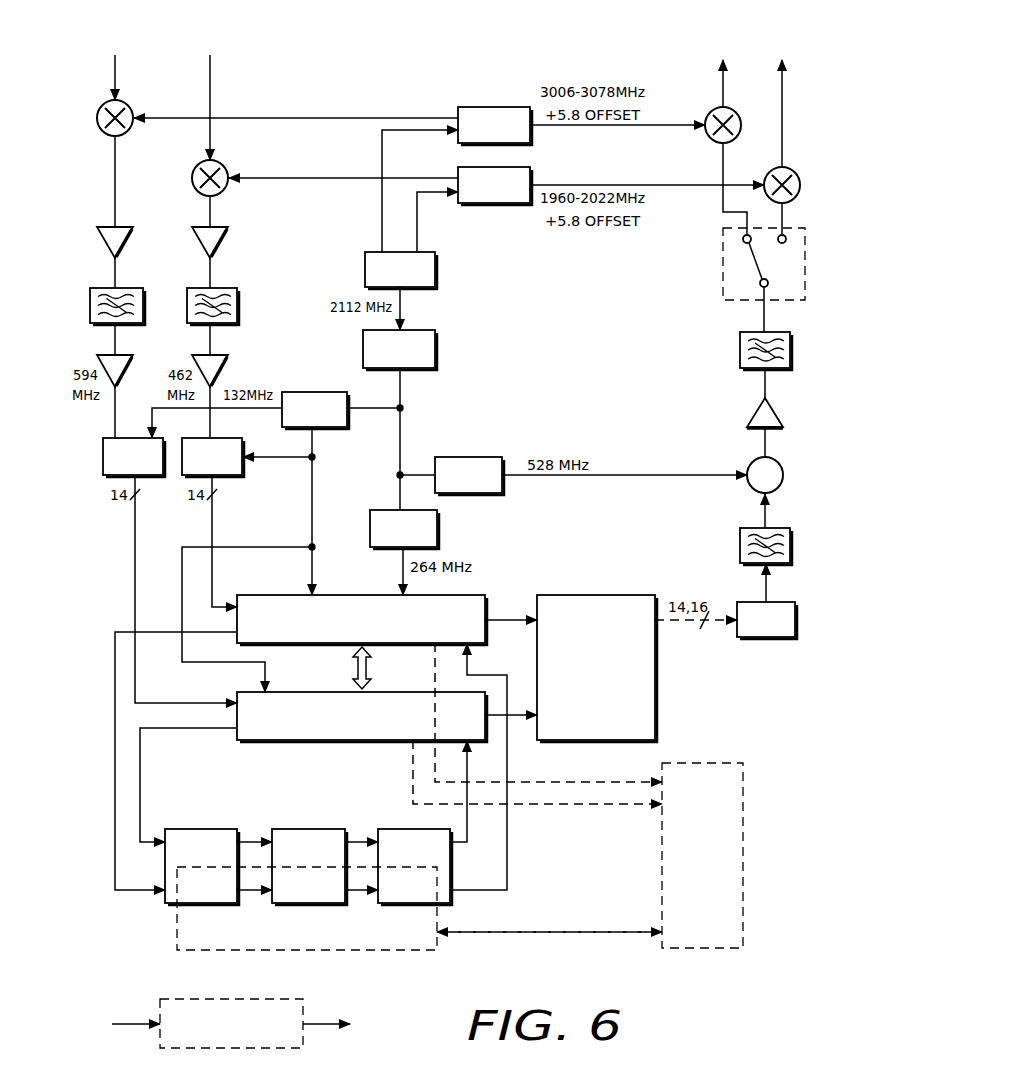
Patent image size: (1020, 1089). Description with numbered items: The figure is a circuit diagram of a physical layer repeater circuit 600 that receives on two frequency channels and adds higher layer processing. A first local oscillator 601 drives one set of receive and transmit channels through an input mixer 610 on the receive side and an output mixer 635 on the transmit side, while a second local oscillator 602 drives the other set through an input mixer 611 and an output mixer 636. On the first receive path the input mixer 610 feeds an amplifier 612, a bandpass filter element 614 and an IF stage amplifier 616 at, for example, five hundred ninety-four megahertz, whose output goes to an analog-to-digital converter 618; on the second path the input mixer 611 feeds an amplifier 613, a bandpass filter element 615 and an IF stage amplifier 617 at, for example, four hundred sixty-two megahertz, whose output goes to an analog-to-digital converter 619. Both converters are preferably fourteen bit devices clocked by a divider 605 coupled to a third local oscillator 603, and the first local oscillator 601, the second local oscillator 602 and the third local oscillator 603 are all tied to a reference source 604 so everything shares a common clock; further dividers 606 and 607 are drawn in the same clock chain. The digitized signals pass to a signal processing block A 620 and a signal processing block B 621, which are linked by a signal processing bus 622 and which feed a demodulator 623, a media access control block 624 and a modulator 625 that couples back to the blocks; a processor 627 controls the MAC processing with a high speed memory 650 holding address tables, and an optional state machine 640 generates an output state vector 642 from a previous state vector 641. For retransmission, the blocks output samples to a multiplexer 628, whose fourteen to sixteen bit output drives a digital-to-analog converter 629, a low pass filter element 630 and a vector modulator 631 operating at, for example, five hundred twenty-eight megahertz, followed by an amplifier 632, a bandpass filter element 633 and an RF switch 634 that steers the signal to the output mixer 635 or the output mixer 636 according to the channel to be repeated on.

The physical layer repeater circuit 600 is at (368, 79).
The local oscillator LO 1 601 is at (490, 107).
The local oscillator LO 2 602 is at (490, 203).
The local oscillator LO 3 603 is at (435, 349).
The reference source 604 is at (435, 272).
The divider 605 is at (325, 427).
The divide-by-8 divider 606 is at (437, 530).
The divide-by-4 divider 607 is at (490, 493).
The input mixer 610 is at (130, 105).
The input mixer 611 is at (225, 165).
The amplifier 612 is at (130, 245).
The amplifier 613 is at (225, 245).
The bandpass filter element 614 is at (143, 305).
The bandpass filter element 615 is at (237, 305).
The IF stage amplifier 616 is at (130, 365).
The IF stage amplifier 617 is at (225, 375).
The analog-to-digital converter 618 is at (103, 455).
The analog-to-digital converter 619 is at (242, 478).
The signal processing block A 620 is at (485, 595).
The signal processing block B 621 is at (318, 742).
The signal processing bus 622 is at (355, 672).
The demodulator 623 is at (212, 829).
The media access control block 624 is at (312, 829).
The modulator 625 is at (412, 829).
The processor 627 is at (262, 955).
The multiplexer 628 is at (608, 595).
The digital-to-analog converter 629 is at (780, 637).
The low pass filter element 630 is at (740, 542).
The vector modulator 631 is at (780, 470).
The amplifier 632 is at (748, 415).
The bandpass filter element 633 is at (740, 347).
The RF switch 634 is at (723, 265).
The output mixer 635 is at (735, 110).
The output mixer 636 is at (795, 172).
The state machine 640 is at (203, 999).
The previous state vector Si 641 is at (102, 1038).
The output state vector Si+1 642 is at (378, 1040).
The memory 650 is at (722, 763).